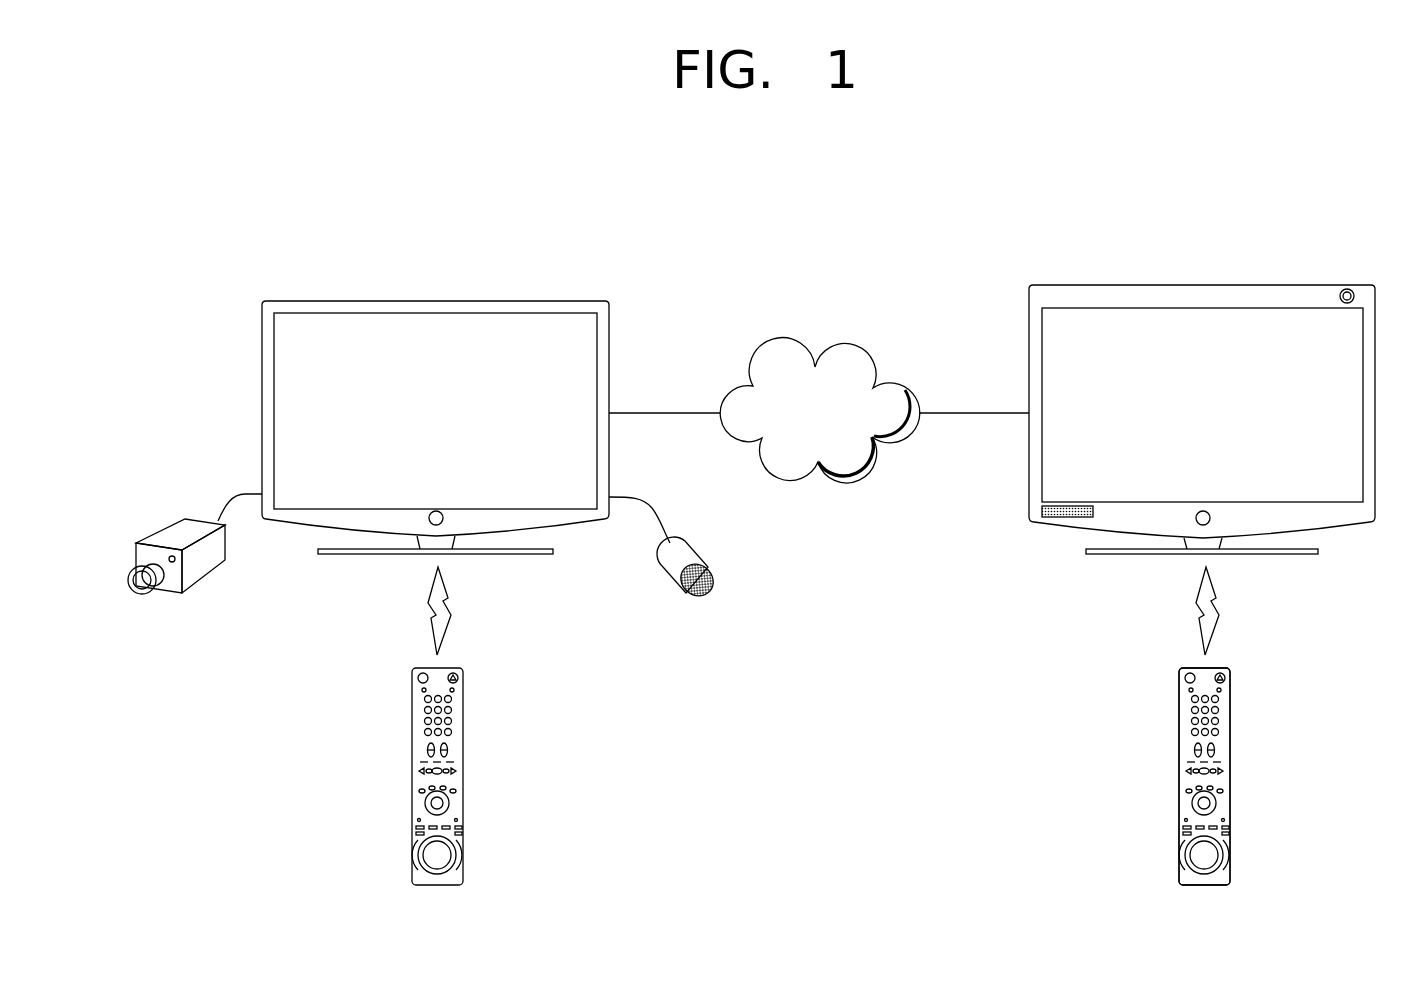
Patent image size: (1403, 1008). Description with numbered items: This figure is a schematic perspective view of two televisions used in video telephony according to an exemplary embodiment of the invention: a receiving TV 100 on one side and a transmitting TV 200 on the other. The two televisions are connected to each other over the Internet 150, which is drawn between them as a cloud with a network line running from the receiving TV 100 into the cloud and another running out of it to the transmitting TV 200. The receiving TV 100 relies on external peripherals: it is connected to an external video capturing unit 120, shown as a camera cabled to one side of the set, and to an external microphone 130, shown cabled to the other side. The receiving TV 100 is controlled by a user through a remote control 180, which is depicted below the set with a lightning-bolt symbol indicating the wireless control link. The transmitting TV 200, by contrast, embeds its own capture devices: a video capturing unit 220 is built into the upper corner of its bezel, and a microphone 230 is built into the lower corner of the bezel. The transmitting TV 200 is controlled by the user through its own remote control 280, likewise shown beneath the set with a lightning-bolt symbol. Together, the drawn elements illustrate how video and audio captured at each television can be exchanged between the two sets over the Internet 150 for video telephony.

The receiving TV 100 is at (476, 300).
The external video capturing unit 120 is at (162, 530).
The external microphone 130 is at (703, 554).
The Internet 150 is at (848, 341).
The remote control 180 is at (466, 857).
The transmitting TV 200 is at (1204, 284).
The video capturing unit 220 is at (1350, 289).
The microphone 230 is at (1058, 520).
The remote control 280 is at (1233, 857).